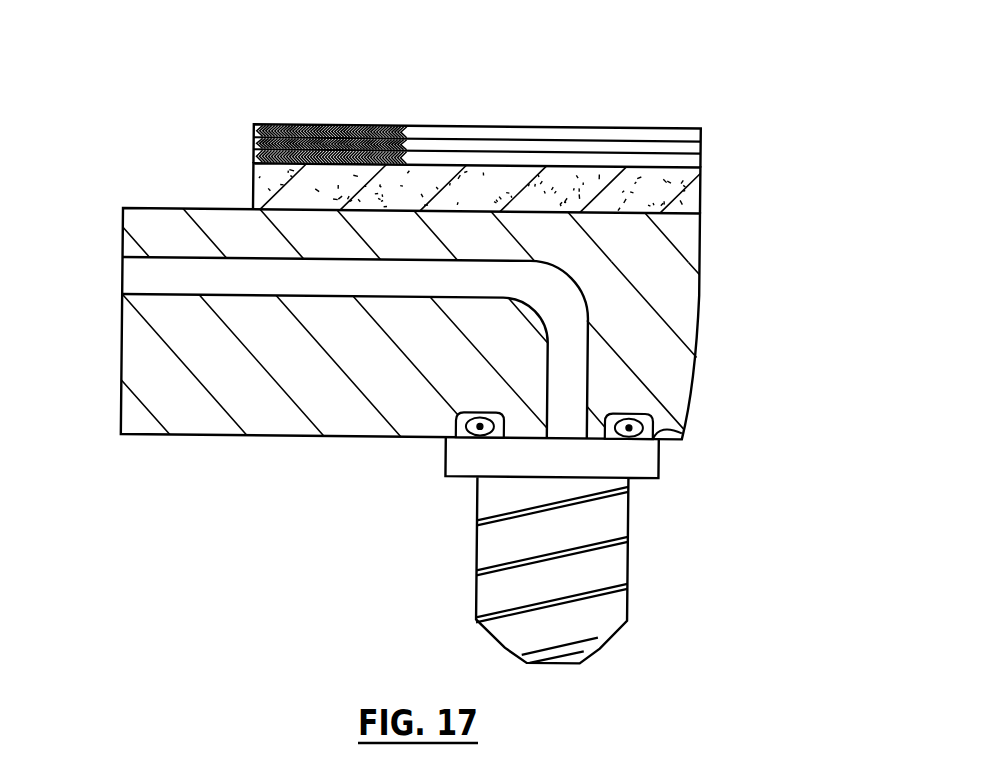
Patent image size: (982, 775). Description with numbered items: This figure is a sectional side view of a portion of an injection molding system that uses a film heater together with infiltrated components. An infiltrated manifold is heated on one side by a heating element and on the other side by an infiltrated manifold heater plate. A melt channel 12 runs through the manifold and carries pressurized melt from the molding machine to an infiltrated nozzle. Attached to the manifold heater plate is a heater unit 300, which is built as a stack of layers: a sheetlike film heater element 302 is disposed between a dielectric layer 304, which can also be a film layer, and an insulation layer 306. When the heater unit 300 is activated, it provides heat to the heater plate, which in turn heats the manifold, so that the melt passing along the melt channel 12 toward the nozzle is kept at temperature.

The heater unit 300 is at (488, 143).
The insulation layer 306 is at (253, 129).
The film heater element 302 is at (253, 141).
The dielectric layer 304 is at (253, 157).
The melt channel 12 is at (123, 273).